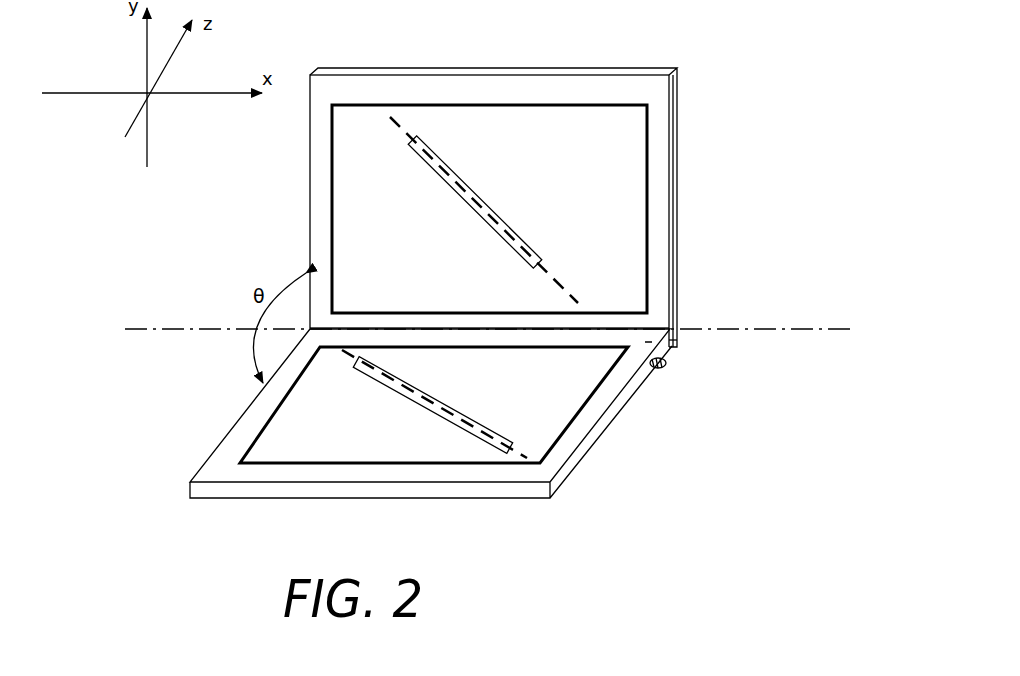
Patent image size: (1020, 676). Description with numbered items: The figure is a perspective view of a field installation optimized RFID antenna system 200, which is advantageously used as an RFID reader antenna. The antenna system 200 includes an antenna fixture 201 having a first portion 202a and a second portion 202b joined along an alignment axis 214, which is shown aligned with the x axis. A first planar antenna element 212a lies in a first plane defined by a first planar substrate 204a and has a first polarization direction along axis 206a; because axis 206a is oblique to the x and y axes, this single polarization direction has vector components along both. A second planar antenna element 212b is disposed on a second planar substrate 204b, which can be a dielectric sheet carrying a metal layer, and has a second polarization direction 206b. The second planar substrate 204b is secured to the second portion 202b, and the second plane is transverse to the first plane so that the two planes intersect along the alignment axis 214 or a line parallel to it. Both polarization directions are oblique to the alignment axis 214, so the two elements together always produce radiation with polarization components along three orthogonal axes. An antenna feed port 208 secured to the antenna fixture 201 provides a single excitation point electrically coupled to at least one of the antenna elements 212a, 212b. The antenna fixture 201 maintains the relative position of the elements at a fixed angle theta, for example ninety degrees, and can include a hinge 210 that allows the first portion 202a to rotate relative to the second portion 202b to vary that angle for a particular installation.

The RFID antenna system 200 is at (756, 177).
The antenna fixture 201 is at (307, 225).
The first portion of antenna fixture 202a is at (595, 66).
The second portion of antenna fixture 202b is at (578, 453).
The first planar substrate 204a is at (625, 181).
The second planar substrate 204b is at (499, 386).
The first polarization direction axis 206a is at (551, 279).
The second polarization direction 206b is at (516, 457).
The antenna feed port 208 is at (671, 370).
The hinge 210 is at (685, 343).
The first planar antenna element 212a is at (528, 203).
The second planar antenna element 212b is at (402, 395).
The alignment axis 214 is at (791, 325).